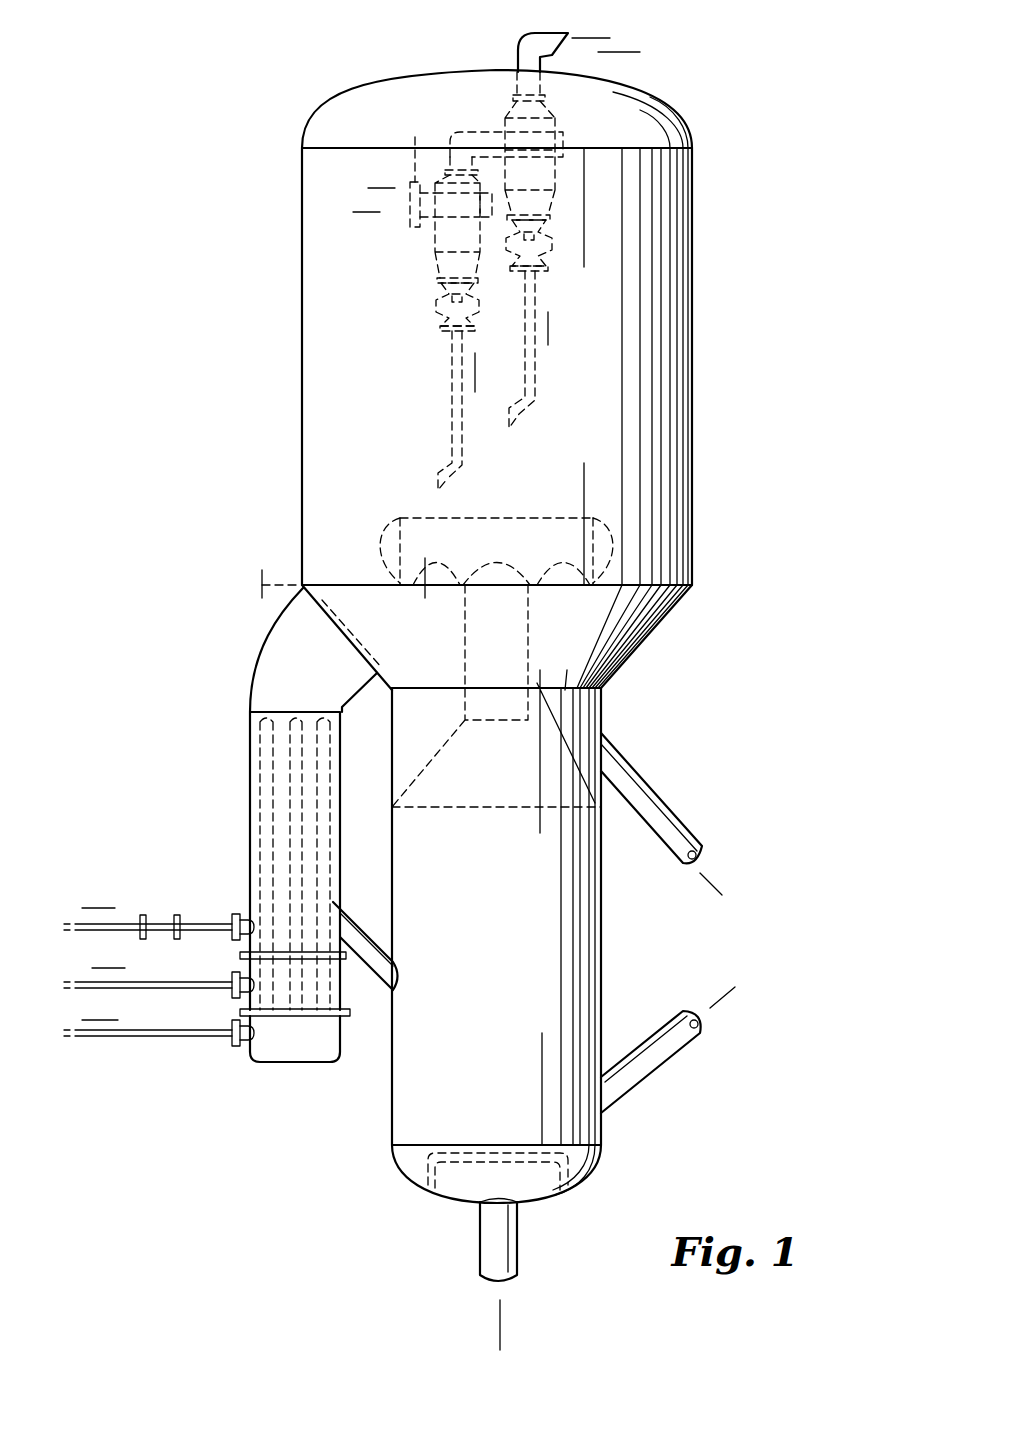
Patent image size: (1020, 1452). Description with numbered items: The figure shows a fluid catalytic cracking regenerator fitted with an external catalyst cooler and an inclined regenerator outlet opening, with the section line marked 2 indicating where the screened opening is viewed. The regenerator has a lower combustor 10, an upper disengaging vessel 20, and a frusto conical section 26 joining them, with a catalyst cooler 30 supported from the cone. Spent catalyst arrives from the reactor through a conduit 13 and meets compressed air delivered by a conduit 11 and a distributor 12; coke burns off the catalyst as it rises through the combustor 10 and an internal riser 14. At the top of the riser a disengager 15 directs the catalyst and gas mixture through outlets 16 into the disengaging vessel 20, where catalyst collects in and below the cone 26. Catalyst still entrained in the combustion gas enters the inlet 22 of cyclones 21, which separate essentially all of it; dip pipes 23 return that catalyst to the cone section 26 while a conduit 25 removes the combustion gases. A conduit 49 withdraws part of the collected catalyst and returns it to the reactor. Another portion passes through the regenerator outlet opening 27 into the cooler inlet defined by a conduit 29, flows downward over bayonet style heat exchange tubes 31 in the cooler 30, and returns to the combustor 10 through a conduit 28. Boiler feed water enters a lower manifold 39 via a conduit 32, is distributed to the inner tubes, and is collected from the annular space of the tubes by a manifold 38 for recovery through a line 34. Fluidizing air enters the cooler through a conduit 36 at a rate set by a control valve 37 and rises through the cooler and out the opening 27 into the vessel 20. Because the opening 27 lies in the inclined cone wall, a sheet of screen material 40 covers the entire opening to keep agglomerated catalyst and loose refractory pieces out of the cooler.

The section line 2- 2 is at (342, 602).
The combustor 10 is at (601, 893).
The conduit 11 is at (520, 1238).
The distributor 12 is at (588, 1165).
The conduit 13 is at (668, 1018).
The internal riser 14 is at (528, 598).
The disengager 15 is at (515, 516).
The outlets 16 is at (440, 566).
The upper disengaging vessel 20 is at (693, 364).
The cyclones 21 is at (553, 120).
The inlet 22 is at (422, 168).
The dip pipes 23 is at (450, 372).
The conduit 25 is at (518, 50).
The frusto conical section 26 is at (612, 650).
The regenerator outlet opening 27 is at (345, 635).
The conduit 28 is at (370, 902).
The conduit 29 is at (248, 690).
The catalyst cooler 30 is at (250, 762).
The heat exchange tubes 31 is at (290, 798).
The conduit 32 is at (170, 1040).
The line 34 is at (185, 982).
The conduit 36 is at (215, 922).
The control valve 37 is at (160, 912).
The manifold 38 is at (247, 1000).
The manifold 39 is at (280, 1065).
The sheet of screen material 40 is at (350, 624).
The conduit 49 is at (640, 766).